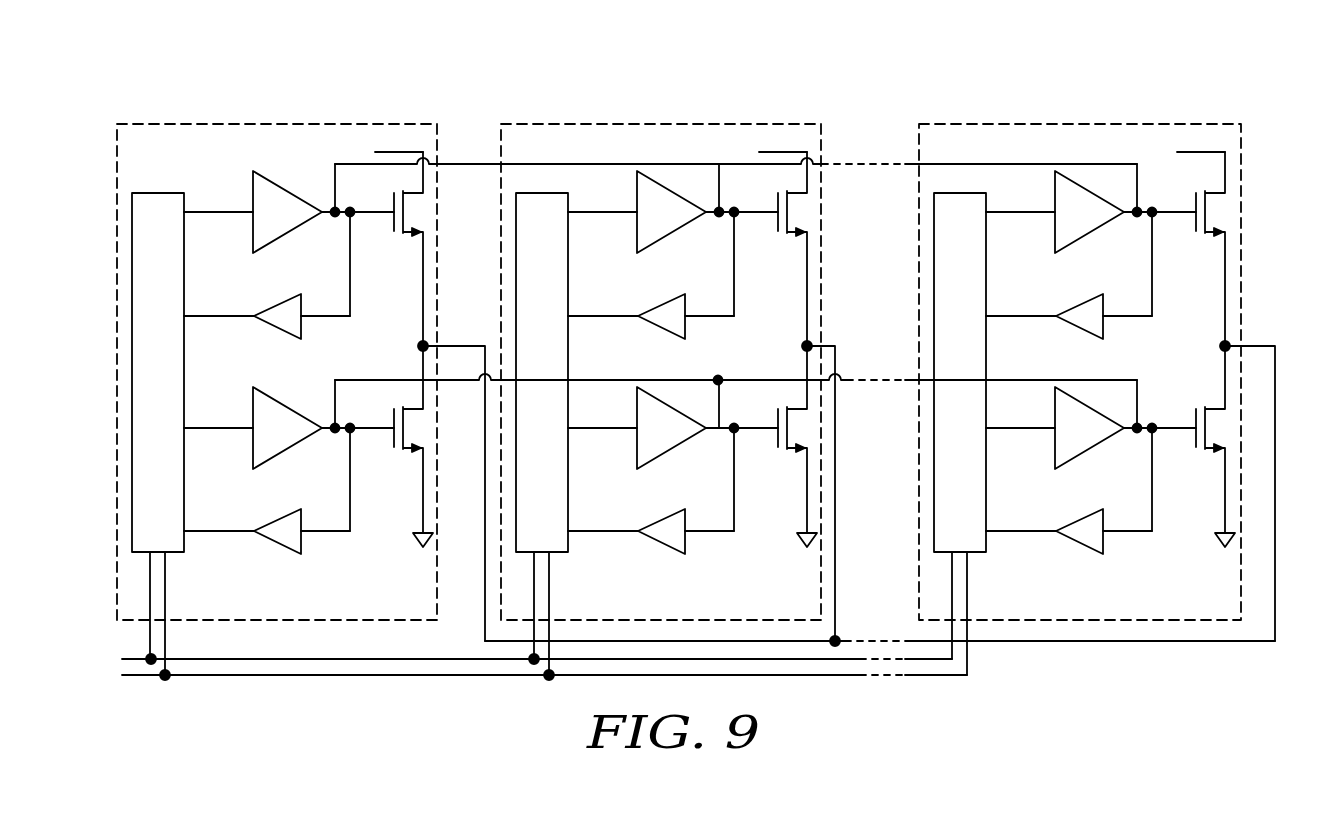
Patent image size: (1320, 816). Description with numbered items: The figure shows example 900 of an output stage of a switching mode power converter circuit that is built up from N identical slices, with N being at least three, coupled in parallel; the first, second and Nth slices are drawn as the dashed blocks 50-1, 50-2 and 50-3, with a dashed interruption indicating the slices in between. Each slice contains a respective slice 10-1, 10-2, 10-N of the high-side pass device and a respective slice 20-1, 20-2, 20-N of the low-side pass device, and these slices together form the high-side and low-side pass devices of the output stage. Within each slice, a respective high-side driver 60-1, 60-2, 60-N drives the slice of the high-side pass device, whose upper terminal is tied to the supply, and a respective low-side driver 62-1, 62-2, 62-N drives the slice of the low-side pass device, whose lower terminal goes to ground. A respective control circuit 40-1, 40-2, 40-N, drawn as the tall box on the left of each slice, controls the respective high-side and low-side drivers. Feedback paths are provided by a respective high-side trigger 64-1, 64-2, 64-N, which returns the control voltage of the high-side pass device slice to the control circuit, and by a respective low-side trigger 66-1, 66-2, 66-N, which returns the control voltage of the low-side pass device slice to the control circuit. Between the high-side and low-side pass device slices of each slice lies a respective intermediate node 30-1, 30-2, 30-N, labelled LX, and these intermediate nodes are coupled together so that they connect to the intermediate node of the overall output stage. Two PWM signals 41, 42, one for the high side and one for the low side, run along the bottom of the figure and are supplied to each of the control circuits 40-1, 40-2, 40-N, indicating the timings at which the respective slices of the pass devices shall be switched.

The output stage example 900 is at (286, 68).
The first phase circuit 50-1 is at (238, 124).
The second phase circuit 50-2 is at (622, 124).
The Nth phase circuit 50-3 is at (1040, 124).
The control circuit 40-1 is at (172, 193).
The control circuit 40-2 is at (556, 193).
The control circuit 40-N is at (980, 193).
The high-side driver 60-1 is at (272, 240).
The high-side driver 60-2 is at (656, 240).
The high-side driver 60-N is at (1074, 240).
The low-side driver 62-1 is at (272, 456).
The low-side driver 62-2 is at (656, 456).
The low-side driver 62-N is at (1074, 456).
The high-side trigger 64-1 is at (280, 333).
The high-side trigger 64-2 is at (664, 333).
The high-side trigger 64-N is at (1082, 333).
The low-side trigger 66-1 is at (280, 548).
The low-side trigger 66-2 is at (664, 548).
The low-side trigger 66-N is at (1082, 548).
The slice of the high-side pass device 10-1 is at (412, 212).
The slice of the high-side pass device 10-2 is at (796, 212).
The slice of the high-side pass device 10-N is at (1214, 212).
The slice of the low-side pass device 20-1 is at (412, 428).
The slice of the low-side pass device 20-2 is at (796, 428).
The slice of the low-side pass device 20-N is at (1214, 428).
The intermediate node 30-1 is at (418, 345).
The intermediate node 30-2 is at (802, 345).
The intermediate node 30-N is at (1220, 345).
The PWM signal 41 is at (128, 658).
The PWM signal 42 is at (128, 676).